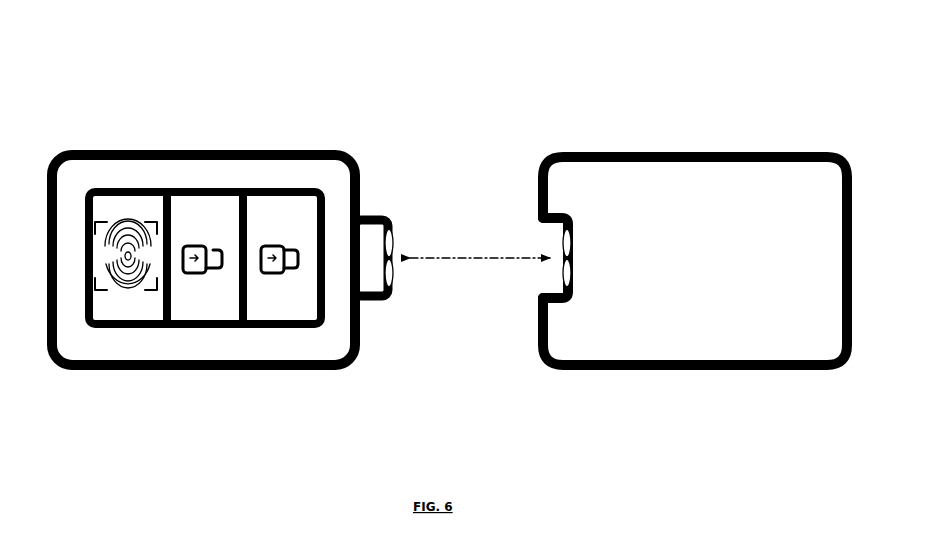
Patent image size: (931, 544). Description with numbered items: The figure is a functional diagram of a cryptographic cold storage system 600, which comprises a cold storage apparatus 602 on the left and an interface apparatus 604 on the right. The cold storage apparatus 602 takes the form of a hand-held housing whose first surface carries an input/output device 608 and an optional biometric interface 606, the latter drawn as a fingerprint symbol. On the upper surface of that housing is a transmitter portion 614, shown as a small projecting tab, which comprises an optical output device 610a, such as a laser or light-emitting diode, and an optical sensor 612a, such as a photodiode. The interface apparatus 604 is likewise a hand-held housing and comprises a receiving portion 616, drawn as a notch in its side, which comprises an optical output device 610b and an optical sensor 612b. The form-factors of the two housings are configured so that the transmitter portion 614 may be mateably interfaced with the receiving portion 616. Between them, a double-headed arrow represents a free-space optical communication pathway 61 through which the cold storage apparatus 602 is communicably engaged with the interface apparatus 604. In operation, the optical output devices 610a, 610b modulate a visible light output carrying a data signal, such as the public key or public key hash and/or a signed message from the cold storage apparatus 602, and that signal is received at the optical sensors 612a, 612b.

The cryptographic cold storage system 600 is at (72, 48).
The cold storage apparatus 602 is at (285, 150).
The interface apparatus 604 is at (692, 150).
The biometric interface 606 is at (132, 290).
The input/output device 608 is at (255, 308).
The optical output device 610a is at (394, 236).
The optical sensor 612a is at (394, 284).
The optical output device 610b is at (562, 240).
The optical sensor 612b is at (562, 280).
The transmitter portion 614 is at (378, 208).
The receiving portion 616 is at (571, 211).
The free-space optical communication pathway 61 is at (485, 258).